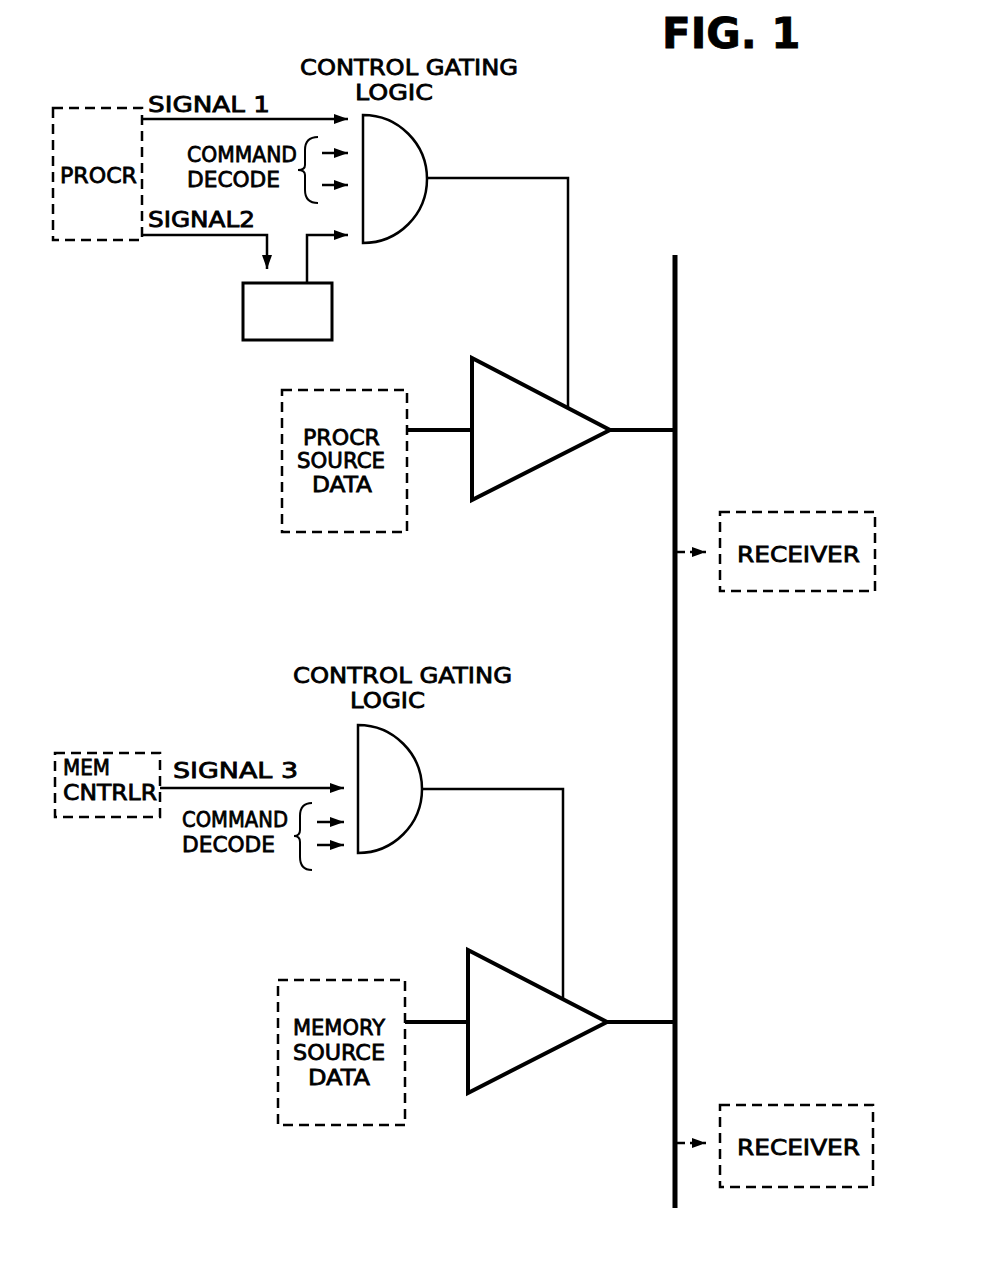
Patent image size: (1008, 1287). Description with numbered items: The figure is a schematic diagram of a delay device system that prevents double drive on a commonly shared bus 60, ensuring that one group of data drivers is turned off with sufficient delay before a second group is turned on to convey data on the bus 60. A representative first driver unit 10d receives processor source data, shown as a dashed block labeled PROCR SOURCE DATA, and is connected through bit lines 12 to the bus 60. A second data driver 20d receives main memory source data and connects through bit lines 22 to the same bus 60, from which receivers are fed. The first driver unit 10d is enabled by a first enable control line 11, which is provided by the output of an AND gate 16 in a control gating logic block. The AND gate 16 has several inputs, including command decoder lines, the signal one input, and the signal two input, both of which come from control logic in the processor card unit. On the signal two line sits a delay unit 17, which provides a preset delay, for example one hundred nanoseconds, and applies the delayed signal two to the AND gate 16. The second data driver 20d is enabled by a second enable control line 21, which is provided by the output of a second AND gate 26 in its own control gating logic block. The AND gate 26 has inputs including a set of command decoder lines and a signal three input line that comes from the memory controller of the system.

The first driver unit 10d is at (545, 467).
The first enable control line 11 is at (552, 183).
The bit lines 12 is at (648, 425).
The AND gate 16 is at (413, 213).
The delay unit 17 is at (243, 310).
The second data driver 20d is at (552, 1050).
The second enable control line 21 is at (538, 792).
The bit lines 22 is at (643, 1020).
The AND gate 26 is at (410, 825).
The commonly shared bus 60 is at (677, 714).